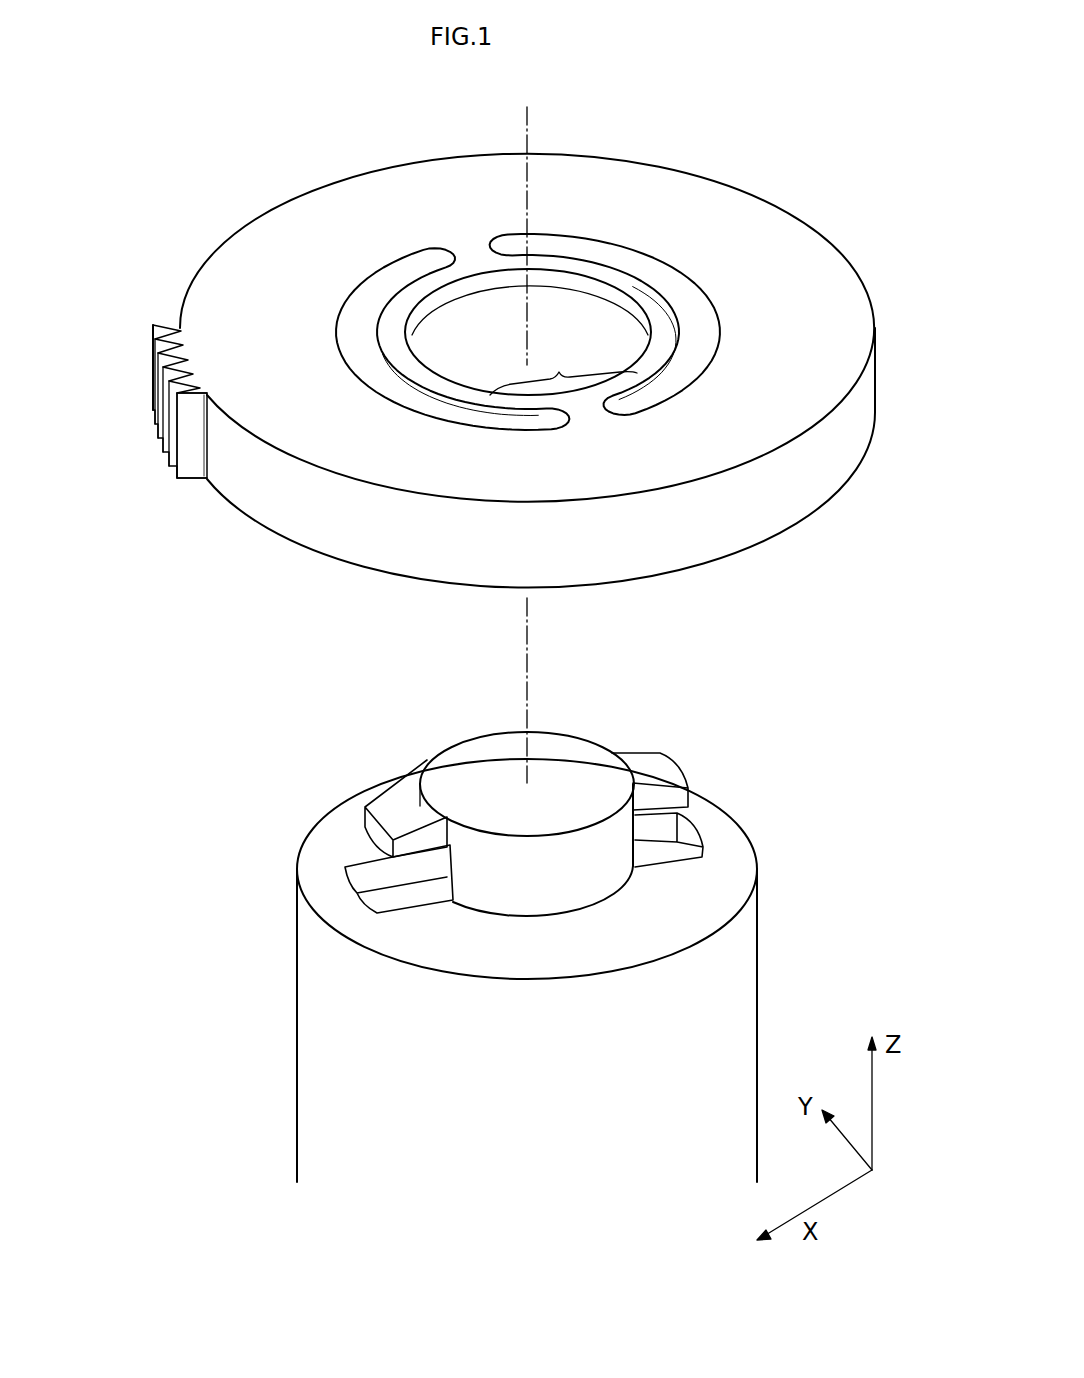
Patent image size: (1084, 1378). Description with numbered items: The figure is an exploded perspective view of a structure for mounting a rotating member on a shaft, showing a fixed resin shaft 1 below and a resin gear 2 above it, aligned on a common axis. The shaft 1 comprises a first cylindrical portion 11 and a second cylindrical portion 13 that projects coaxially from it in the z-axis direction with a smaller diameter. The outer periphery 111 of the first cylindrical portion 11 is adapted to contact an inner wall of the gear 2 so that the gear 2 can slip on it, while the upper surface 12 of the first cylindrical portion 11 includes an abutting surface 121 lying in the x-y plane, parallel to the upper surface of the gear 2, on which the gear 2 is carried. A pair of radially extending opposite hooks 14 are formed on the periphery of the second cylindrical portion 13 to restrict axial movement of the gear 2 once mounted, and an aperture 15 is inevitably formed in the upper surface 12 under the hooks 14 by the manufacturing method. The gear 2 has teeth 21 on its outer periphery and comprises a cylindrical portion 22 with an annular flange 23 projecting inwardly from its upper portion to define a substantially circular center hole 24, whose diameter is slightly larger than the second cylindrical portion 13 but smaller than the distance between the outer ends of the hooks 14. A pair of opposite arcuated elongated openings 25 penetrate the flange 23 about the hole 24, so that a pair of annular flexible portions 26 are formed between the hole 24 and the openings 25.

The shaft 1 is at (510, 939).
The first cylindrical portion 11 is at (297, 1030).
The outer periphery 111 is at (340, 1132).
The upper surface 12 is at (727, 845).
The abutting surface 121 is at (713, 877).
The second cylindrical portion 13 is at (585, 738).
The hooks 14 is at (388, 797).
The aperture 15 is at (378, 872).
The gear 2 is at (558, 350).
The teeth 21 is at (195, 478).
The cylindrical portion 22 is at (865, 404).
The annular flange 23 is at (718, 420).
The center hole 24 is at (603, 337).
The arcuated elongated openings 25 is at (660, 283).
The annular flexible portions 26 is at (563, 369).